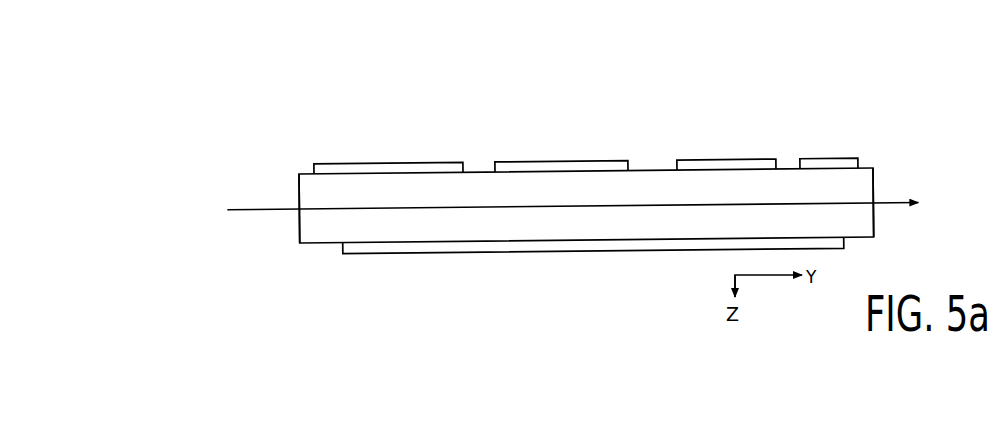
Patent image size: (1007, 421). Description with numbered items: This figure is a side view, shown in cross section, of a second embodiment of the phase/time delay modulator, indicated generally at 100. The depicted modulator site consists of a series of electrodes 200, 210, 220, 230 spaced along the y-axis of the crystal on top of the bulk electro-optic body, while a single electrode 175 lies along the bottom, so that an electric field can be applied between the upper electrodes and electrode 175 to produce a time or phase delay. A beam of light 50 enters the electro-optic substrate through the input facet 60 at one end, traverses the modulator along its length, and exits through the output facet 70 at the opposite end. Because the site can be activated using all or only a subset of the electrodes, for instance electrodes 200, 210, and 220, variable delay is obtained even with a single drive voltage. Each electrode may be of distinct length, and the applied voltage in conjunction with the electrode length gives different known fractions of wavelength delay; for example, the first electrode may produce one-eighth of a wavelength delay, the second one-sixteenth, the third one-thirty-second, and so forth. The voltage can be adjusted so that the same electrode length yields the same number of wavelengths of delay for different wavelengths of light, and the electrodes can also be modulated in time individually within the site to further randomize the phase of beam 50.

The multilayer device / sensor assembly 100 is at (307, 127).
The beam of light 50 is at (253, 208).
The input facet 60 is at (298, 230).
The output facet 70 is at (875, 222).
The electrode 175 is at (480, 253).
The electrode 200 is at (405, 160).
The electrode 210 is at (558, 160).
The electrode 220 is at (737, 160).
The electrode 230 is at (828, 157).